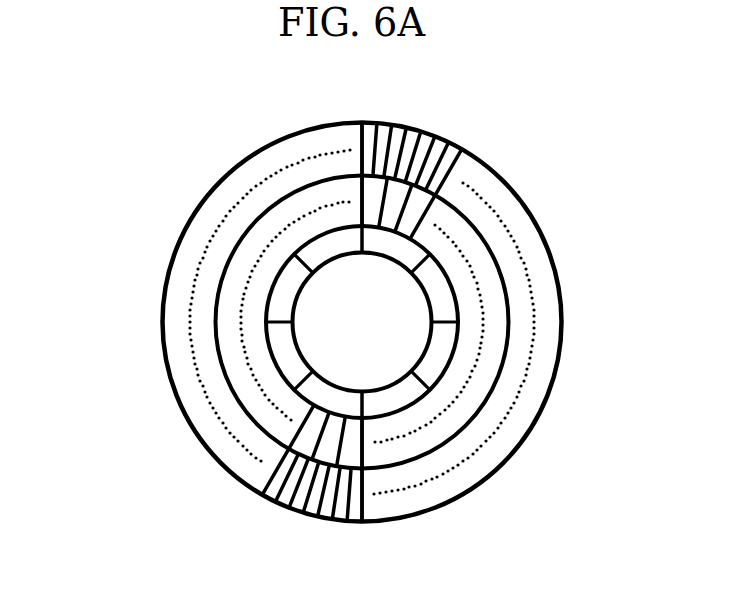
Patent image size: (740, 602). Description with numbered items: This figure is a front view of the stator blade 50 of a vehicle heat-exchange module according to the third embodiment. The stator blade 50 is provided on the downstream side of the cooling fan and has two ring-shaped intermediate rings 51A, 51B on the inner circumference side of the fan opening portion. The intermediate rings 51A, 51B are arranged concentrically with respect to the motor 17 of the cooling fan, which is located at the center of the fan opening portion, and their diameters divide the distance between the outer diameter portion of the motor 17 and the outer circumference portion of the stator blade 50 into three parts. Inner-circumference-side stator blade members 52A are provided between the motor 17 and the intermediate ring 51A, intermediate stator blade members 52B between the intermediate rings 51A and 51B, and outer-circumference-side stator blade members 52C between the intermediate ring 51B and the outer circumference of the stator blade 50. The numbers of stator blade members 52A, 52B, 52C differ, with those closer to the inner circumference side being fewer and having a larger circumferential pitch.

The stator blade 50 is at (160, 318).
The intermediate ring 51A is at (410, 408).
The intermediate ring 51B is at (493, 393).
The inner-circumference-side stator blade members 52A is at (420, 268).
The intermediate stator blade members 52B is at (392, 218).
The outer-circumference-side stator blade members 52C is at (447, 152).
The motor 17 is at (273, 363).